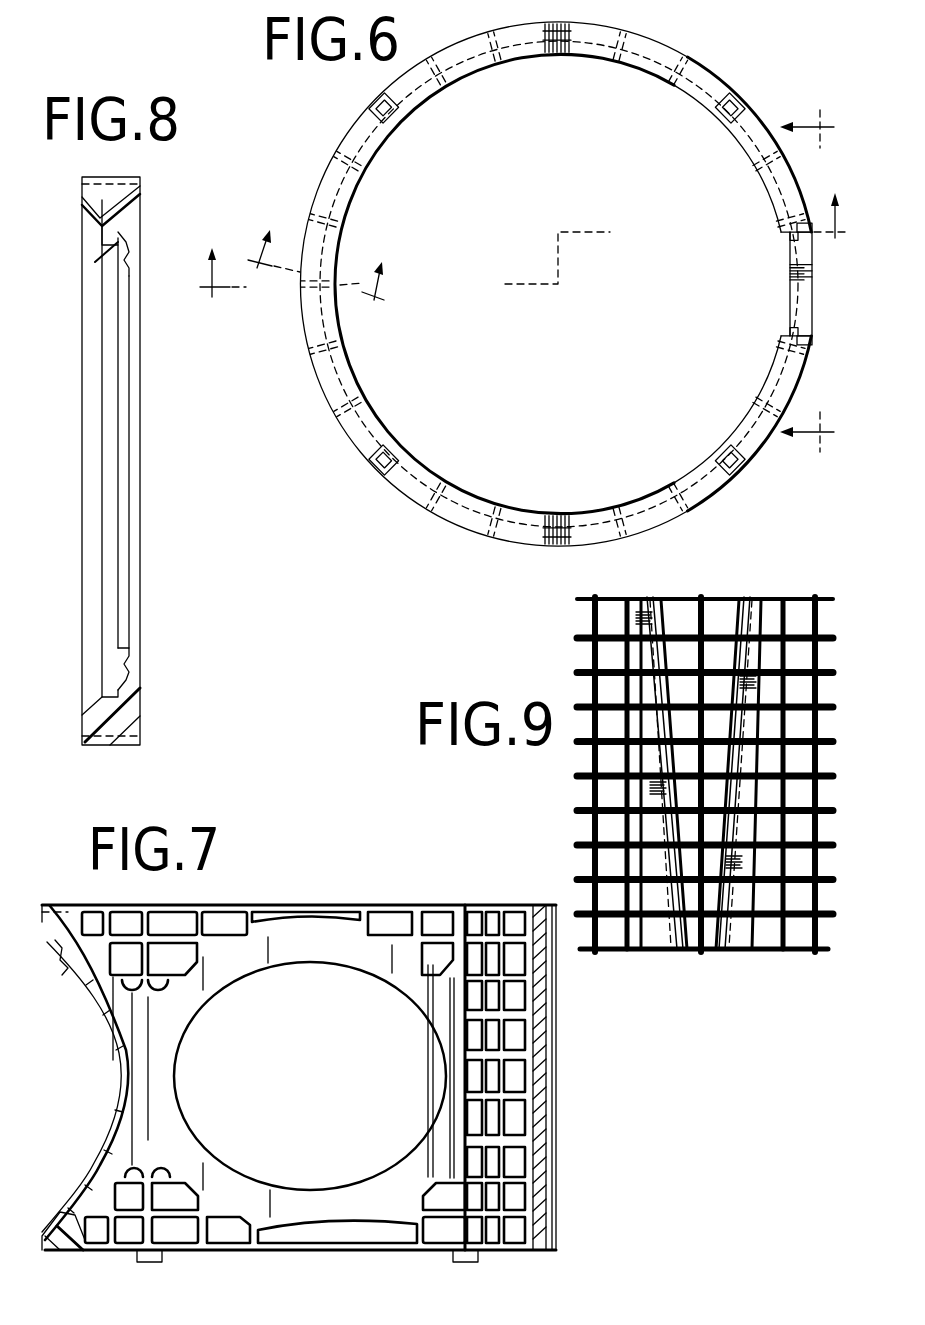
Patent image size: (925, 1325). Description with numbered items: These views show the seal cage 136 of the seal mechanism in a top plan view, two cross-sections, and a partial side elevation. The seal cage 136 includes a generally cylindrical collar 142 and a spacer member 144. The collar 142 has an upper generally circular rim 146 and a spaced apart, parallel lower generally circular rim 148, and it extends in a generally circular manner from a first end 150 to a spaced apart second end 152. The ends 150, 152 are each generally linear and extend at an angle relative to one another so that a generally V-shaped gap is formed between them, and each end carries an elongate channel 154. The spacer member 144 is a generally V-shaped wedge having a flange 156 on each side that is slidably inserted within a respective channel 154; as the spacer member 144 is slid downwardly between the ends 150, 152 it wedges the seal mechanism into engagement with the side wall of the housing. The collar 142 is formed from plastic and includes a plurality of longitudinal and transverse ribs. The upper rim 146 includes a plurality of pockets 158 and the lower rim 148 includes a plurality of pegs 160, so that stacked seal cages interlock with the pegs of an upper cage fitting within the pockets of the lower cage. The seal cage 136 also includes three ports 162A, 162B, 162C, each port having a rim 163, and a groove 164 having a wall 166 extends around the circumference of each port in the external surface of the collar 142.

In FIG. 6, the seal cage 136 is at (522, 277).
In FIG. 7, the seal cage 136 is at (296, 1063).
In FIG. 6, the collar 142 is at (556, 284).
In FIG. 8, the collar 142 is at (134, 469).
In FIG. 7, the collar 142 is at (487, 1077).
In FIG. 6, the spacer member 144 is at (801, 284).
In FIG. 6, the upper rim 146 is at (559, 284).
In FIG. 8, the upper rim 146 is at (111, 206).
In FIG. 7, the upper rim 146 is at (299, 913).
In FIG. 9, the upper rim 146 is at (705, 774).
In FIG. 8, the lower rim 148 is at (111, 716).
In FIG. 6, the first end 150 is at (804, 340).
In FIG. 9, the first end 150 is at (665, 773).
In FIG. 6, the second end 152 is at (804, 227).
In FIG. 9, the second end 152 is at (735, 773).
In FIG. 6, the channel 154 is at (796, 284).
In FIG. 6, the flange 156 is at (794, 284).
In FIG. 6, the pocket 158 is at (557, 284).
In FIG. 7, the peg 160 is at (307, 1256).
In FIG. 6, the port 162A is at (494, 521).
In FIG. 6, the port 162B is at (323, 347).
In FIG. 7, the port 162B is at (85, 1073).
In FIG. 6, the port 162C is at (494, 46).
In FIG. 7, the port 162C is at (310, 1076).
In FIG. 8, the rim 163 is at (123, 461).
In FIG. 7, the rim 163 is at (252, 1077).
In FIG. 8, the groove 164 is at (106, 252).
In FIG. 7, the groove 164 is at (63, 1095).
In FIG. 8, the wall 166 is at (110, 235).